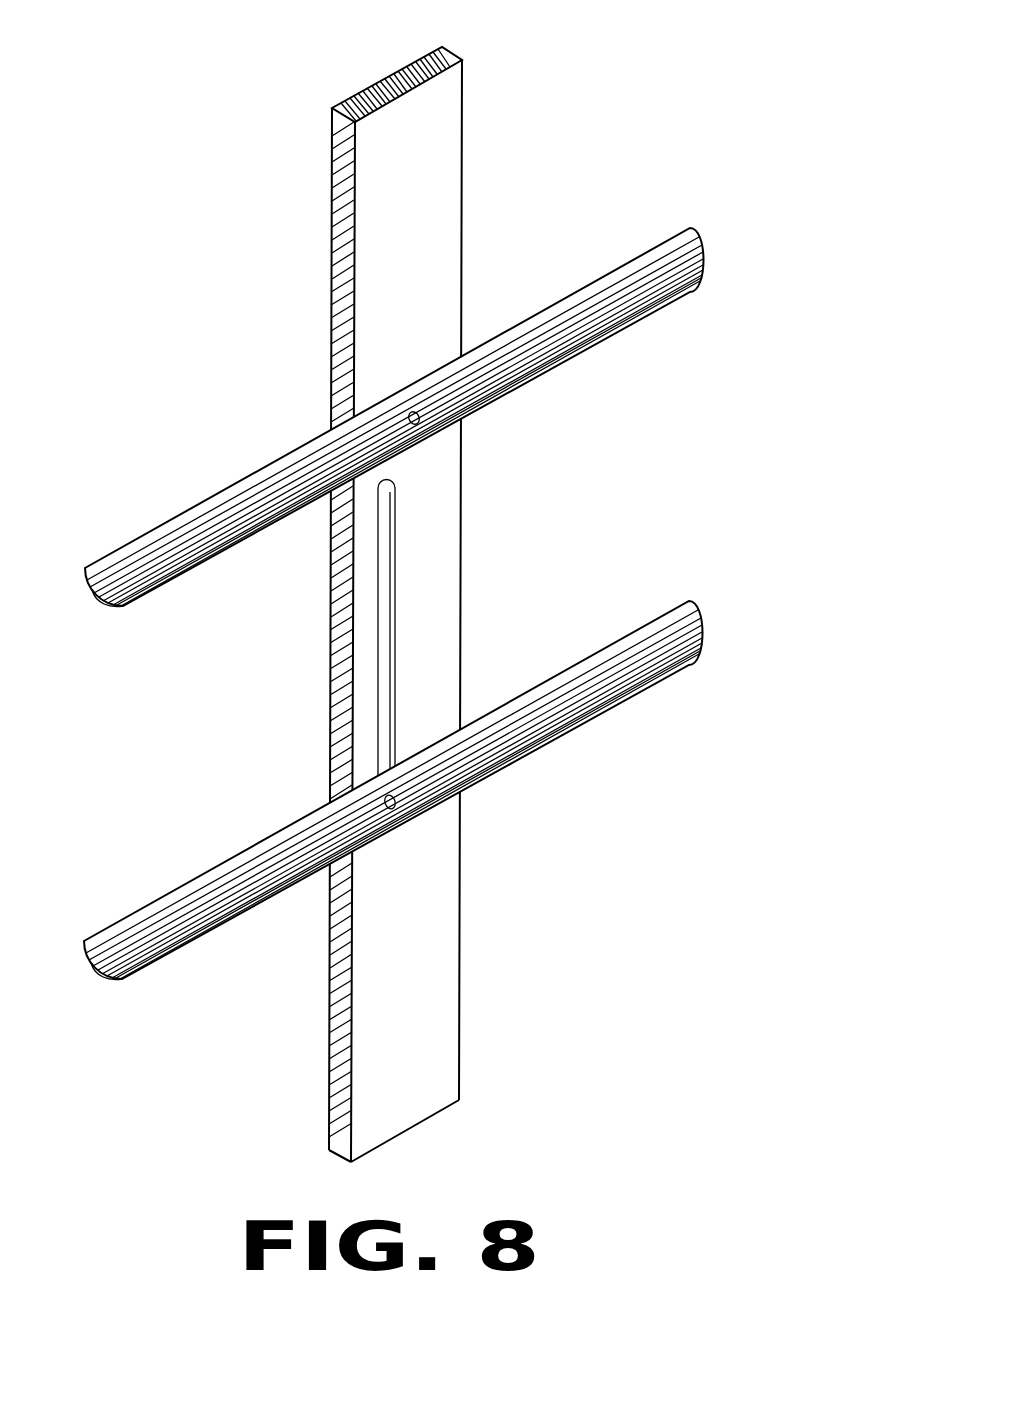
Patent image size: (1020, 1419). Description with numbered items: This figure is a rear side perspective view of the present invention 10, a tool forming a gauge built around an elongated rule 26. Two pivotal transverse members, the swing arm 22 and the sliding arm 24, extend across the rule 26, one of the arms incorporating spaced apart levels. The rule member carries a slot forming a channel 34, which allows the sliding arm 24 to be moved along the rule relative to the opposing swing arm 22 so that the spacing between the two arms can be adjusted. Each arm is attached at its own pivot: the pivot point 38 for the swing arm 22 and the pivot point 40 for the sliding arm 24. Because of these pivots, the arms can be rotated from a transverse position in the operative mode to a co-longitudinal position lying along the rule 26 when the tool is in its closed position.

The present invention 10 is at (567, 183).
The swing arm 22 is at (704, 243).
The sliding arm 24 is at (268, 897).
The rule 26 is at (330, 648).
The channel 34 is at (395, 602).
The pivot point swing arm 38 is at (414, 412).
The pivot point sliding arm 40 is at (396, 808).